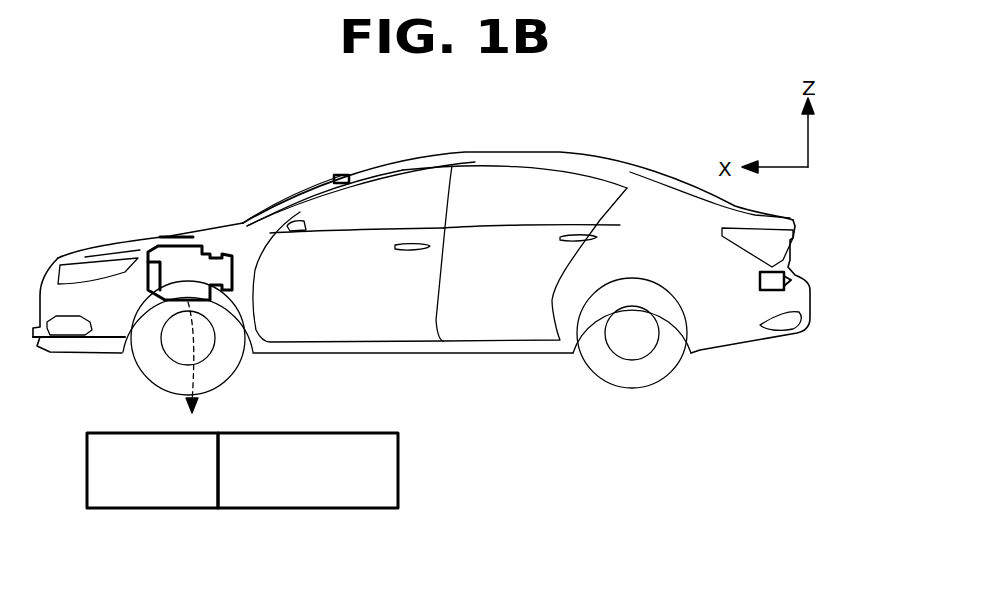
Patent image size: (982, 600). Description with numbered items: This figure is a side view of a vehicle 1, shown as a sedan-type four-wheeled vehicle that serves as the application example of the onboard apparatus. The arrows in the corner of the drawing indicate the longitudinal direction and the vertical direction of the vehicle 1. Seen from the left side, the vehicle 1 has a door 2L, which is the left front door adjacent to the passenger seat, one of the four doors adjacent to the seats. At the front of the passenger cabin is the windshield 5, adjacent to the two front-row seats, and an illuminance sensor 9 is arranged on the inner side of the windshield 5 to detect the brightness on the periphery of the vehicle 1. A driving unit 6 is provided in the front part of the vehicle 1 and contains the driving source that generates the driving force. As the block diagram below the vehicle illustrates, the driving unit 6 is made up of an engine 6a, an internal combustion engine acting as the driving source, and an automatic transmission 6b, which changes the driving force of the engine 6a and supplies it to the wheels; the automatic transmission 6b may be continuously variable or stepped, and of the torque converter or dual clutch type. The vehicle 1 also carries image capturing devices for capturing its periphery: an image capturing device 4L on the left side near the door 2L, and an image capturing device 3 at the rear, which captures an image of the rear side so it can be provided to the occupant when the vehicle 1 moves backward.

The vehicle 1 is at (172, 110).
The door 2L is at (355, 327).
The image capturing device 3 is at (790, 276).
The image capturing device 4L is at (302, 231).
The windshield 5 is at (273, 209).
The driving unit 6 is at (148, 246).
The engine 6a is at (150, 510).
The automatic transmission 6b is at (250, 510).
The illuminance sensor 9 is at (342, 173).